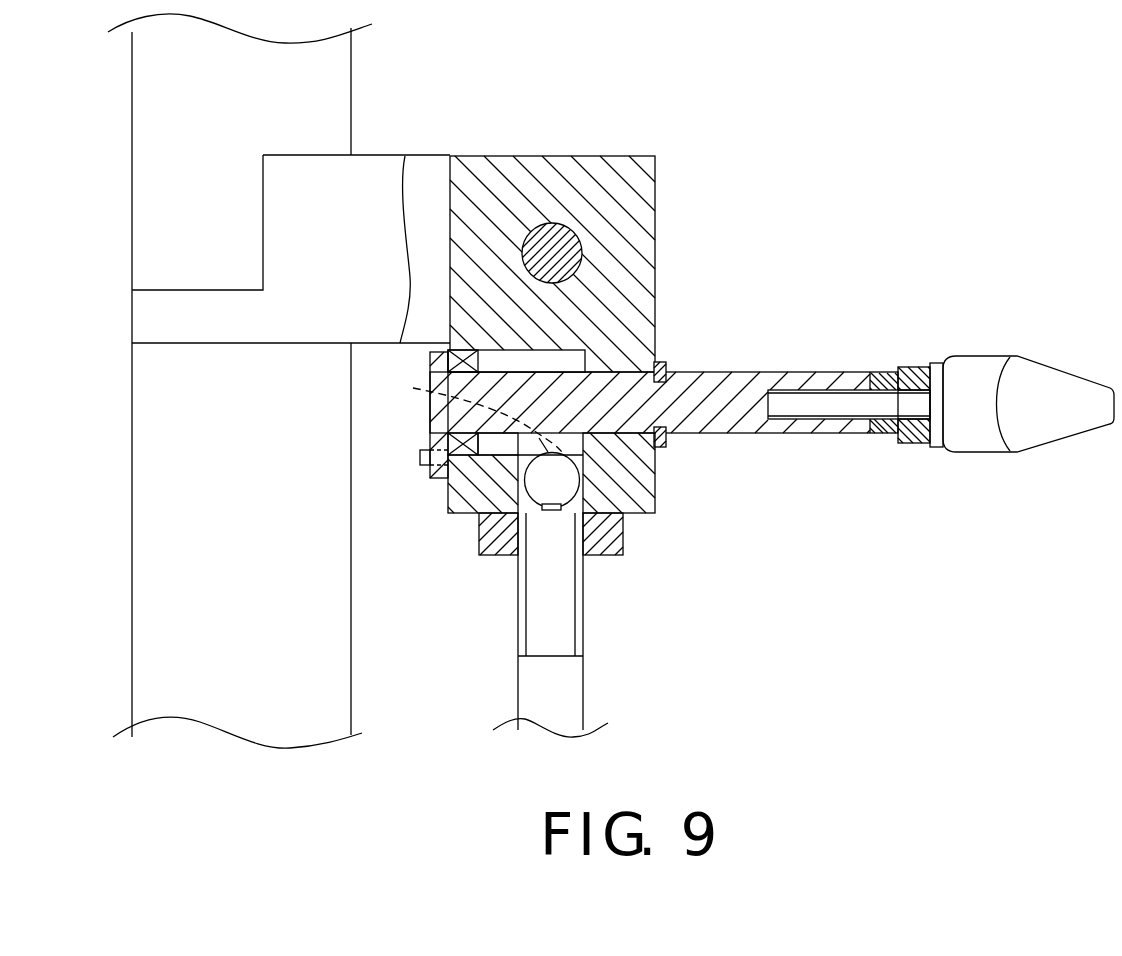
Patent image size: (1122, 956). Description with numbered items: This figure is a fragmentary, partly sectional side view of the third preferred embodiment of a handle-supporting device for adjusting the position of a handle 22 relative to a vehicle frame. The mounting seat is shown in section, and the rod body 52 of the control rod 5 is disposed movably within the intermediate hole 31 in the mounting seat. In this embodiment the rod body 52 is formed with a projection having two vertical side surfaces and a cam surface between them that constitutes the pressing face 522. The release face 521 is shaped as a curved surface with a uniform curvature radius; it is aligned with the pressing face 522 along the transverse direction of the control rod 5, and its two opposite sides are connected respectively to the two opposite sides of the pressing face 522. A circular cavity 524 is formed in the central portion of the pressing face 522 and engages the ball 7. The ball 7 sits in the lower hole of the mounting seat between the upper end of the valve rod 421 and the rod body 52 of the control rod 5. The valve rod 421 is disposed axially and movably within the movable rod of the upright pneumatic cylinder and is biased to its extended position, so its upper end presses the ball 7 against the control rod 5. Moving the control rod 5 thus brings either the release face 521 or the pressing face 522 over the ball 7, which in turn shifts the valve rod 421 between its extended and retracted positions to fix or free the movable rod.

The handle 22 is at (140, 520).
The intermediate hole 31 is at (518, 362).
The release face 521 is at (547, 370).
The control rod 5 is at (431, 406).
The rod body 52 is at (755, 382).
The pressing face 522 is at (585, 468).
The circular cavity 524 is at (462, 414).
The ball 7 is at (540, 480).
The valve rod 421 is at (548, 508).